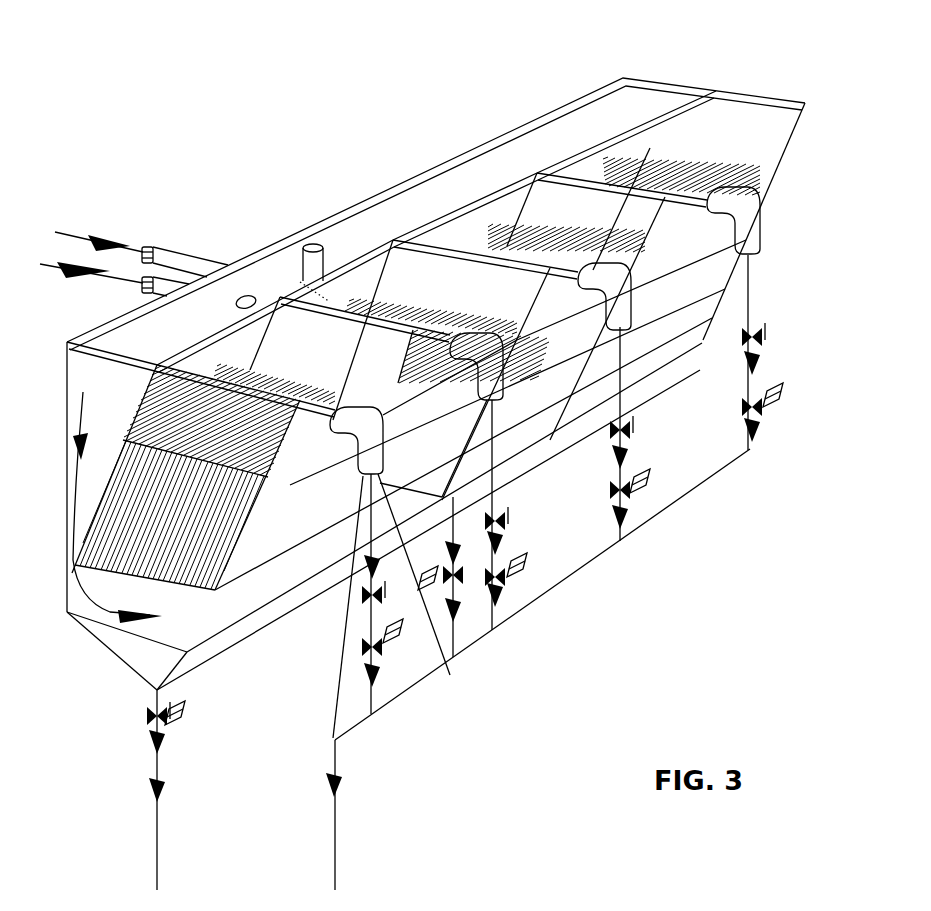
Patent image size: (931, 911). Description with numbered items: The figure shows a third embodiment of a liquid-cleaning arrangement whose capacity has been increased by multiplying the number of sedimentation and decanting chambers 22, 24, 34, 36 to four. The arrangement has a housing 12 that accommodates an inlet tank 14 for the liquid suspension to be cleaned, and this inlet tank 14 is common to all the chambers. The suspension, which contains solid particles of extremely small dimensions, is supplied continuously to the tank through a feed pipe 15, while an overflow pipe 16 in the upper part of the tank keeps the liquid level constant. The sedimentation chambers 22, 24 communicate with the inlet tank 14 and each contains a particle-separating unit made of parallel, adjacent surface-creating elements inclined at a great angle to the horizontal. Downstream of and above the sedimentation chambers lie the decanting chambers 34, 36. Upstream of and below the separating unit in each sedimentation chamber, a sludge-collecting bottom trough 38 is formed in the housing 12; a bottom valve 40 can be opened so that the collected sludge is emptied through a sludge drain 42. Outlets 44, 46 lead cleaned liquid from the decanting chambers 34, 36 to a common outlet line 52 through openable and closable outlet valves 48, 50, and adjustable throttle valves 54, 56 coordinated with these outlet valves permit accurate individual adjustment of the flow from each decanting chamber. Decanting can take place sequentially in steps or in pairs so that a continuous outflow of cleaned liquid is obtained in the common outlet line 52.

The housing 12 is at (328, 497).
The inlet tank 14 is at (293, 250).
The feed pipe 15 is at (143, 283).
The overflow pipe 16 is at (323, 247).
The sedimentation chamber 22 is at (345, 590).
The sedimentation chamber 24 is at (677, 257).
The decanting chamber 34 is at (300, 312).
The decanting chamber 36 is at (450, 283).
The sludge-collecting bottom trough 38 is at (143, 660).
The bottom valve 40 is at (190, 725).
The sludge drain 42 is at (160, 830).
The outlet 44 is at (745, 447).
The outlet 46 is at (750, 237).
The outlet valve 48 is at (393, 647).
The outlet valve 50 is at (517, 572).
The common outlet line 52 is at (333, 840).
The adjustable throttle valve 54 is at (372, 600).
The adjustable throttle valve 56 is at (503, 538).